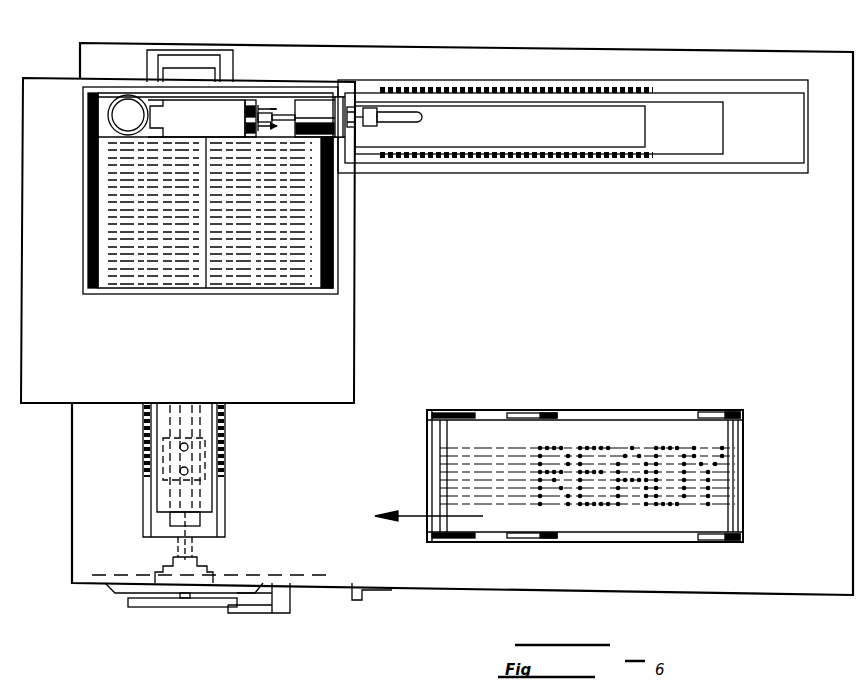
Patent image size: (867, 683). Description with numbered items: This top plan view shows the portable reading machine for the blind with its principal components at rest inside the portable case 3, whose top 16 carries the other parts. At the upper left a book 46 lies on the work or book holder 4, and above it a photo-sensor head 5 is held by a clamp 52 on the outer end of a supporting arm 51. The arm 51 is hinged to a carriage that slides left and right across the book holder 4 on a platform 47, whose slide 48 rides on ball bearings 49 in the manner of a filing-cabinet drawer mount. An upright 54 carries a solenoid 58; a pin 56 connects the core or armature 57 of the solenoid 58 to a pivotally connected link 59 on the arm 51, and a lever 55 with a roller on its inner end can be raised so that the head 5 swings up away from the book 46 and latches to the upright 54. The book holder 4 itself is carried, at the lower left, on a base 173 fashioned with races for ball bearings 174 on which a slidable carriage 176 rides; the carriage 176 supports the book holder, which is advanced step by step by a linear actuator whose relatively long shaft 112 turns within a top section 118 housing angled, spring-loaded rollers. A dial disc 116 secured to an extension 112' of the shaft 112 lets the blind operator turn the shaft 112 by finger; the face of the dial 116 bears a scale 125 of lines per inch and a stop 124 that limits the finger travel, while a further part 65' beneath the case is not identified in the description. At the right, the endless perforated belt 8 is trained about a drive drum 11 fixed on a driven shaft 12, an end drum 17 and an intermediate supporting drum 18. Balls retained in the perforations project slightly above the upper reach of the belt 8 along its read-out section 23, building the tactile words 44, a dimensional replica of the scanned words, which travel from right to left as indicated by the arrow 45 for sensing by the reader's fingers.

The portable case 3 is at (752, 597).
The work or text holder 4 is at (358, 348).
The photo-sensor head 5 is at (128, 97).
The endless perforated belt 8 is at (585, 430).
The drive drum 11 is at (715, 420).
The driven shaft 12 is at (722, 542).
The top of the case 16 is at (560, 296).
The end drum 17 is at (465, 414).
The intermediate supporting drum 18 is at (548, 416).
The read-out section 23 is at (660, 450).
The built-up words 44 is at (604, 508).
The arrow 45 is at (427, 507).
The book 46 is at (313, 296).
The platform 47 is at (752, 100).
The slide 48 is at (677, 103).
The ball bearings 49 is at (452, 88).
The supporting arm 51 is at (205, 100).
The clamp 52 is at (112, 100).
The upright 54 is at (338, 98).
The lever 55 is at (393, 124).
The pin 56 is at (263, 107).
The core or armature 57 is at (287, 112).
The solenoid 58 is at (312, 104).
The link 59 is at (249, 100).
The stop 65' is at (380, 607).
The shaft 112 is at (211, 547).
The shaft extension 112' is at (188, 624).
The dial disc 116 is at (153, 606).
The top section 118 is at (190, 470).
The stop 124 is at (265, 613).
The scale 125 is at (108, 590).
The base 173 is at (160, 527).
The ball bearings 174 is at (151, 452).
The slidable member or carriage 176 is at (160, 498).